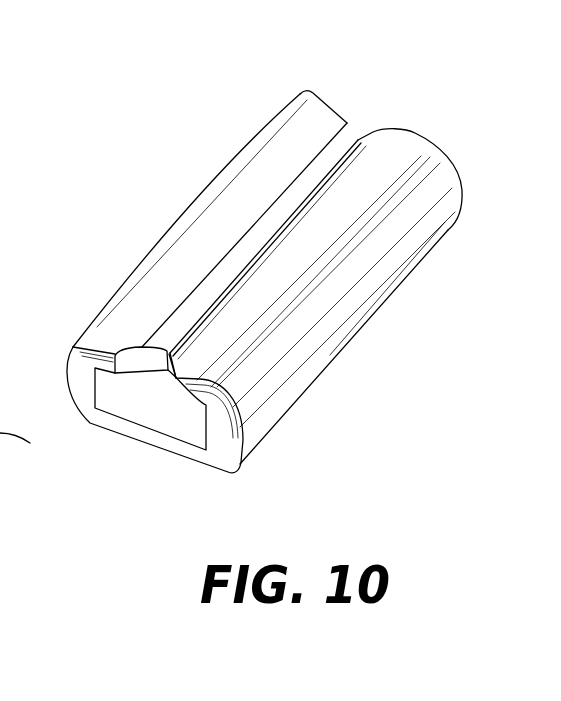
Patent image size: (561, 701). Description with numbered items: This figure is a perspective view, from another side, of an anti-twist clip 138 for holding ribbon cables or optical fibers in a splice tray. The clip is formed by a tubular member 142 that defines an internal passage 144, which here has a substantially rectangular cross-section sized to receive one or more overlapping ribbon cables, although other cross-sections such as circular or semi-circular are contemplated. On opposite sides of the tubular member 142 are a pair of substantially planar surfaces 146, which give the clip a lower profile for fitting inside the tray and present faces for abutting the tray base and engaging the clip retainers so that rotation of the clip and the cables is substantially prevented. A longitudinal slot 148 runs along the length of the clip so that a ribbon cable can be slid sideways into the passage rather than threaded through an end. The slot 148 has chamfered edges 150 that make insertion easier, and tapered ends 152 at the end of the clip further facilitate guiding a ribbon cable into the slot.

The anti-twist clip 138 is at (172, 153).
The tubular member 142 is at (445, 182).
The internal passage 144 is at (142, 374).
The substantially planar surfaces 146 is at (300, 122).
The longitudinal slot 148 is at (357, 130).
The chamfered edges 150 is at (270, 236).
The tapered ends 152 is at (133, 358).